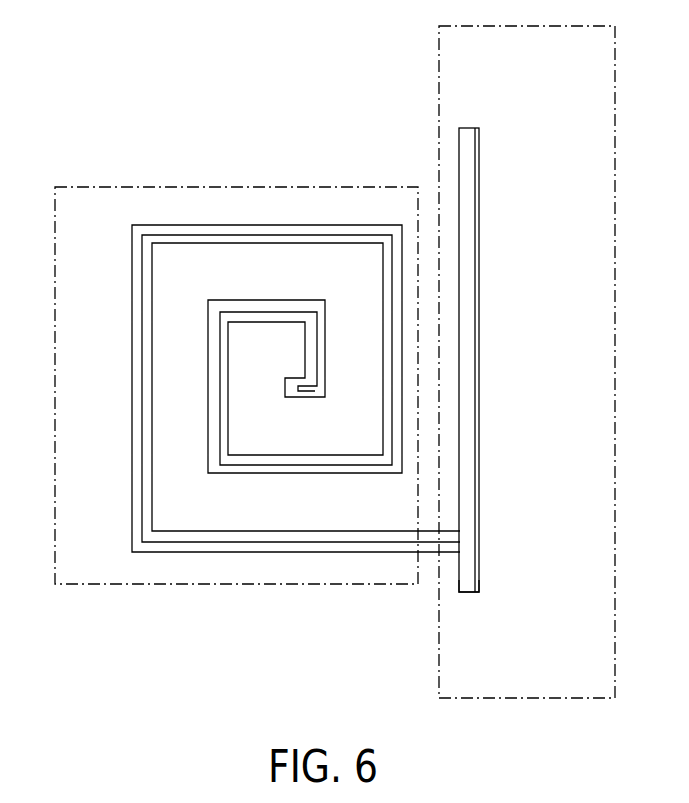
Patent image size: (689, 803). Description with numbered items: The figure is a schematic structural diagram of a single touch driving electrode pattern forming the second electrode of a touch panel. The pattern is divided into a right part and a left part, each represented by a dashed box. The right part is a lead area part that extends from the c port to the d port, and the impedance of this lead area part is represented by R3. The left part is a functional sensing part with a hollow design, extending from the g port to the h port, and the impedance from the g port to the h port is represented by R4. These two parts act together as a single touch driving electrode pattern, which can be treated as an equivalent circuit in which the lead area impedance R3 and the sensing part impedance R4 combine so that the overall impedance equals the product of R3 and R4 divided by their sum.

The impedance of lead area part R3 is at (438, 102).
The impedance of functional sensing part R4 is at (240, 584).
The c port c is at (476, 133).
The d port d is at (468, 592).
The g port g is at (449, 531).
The h port h is at (450, 553).